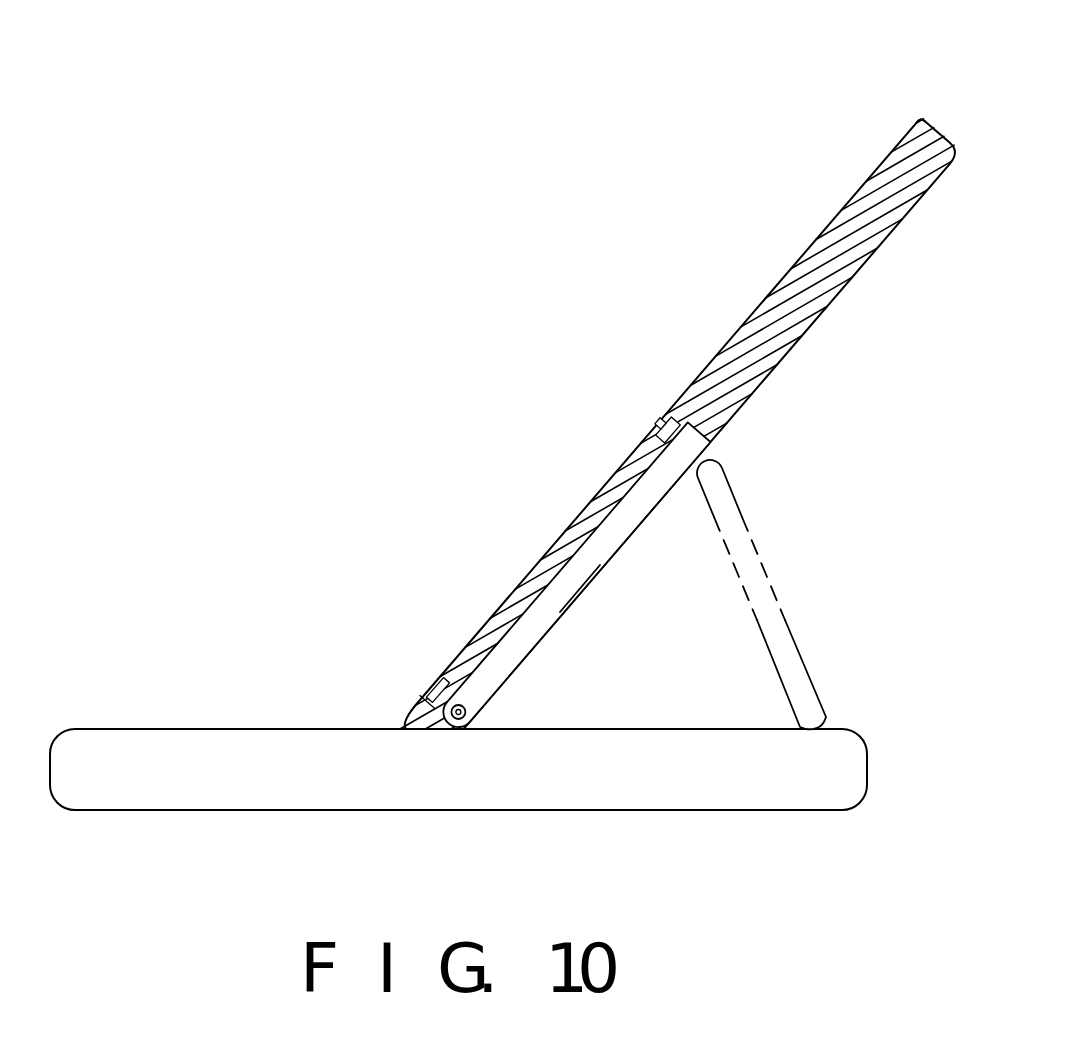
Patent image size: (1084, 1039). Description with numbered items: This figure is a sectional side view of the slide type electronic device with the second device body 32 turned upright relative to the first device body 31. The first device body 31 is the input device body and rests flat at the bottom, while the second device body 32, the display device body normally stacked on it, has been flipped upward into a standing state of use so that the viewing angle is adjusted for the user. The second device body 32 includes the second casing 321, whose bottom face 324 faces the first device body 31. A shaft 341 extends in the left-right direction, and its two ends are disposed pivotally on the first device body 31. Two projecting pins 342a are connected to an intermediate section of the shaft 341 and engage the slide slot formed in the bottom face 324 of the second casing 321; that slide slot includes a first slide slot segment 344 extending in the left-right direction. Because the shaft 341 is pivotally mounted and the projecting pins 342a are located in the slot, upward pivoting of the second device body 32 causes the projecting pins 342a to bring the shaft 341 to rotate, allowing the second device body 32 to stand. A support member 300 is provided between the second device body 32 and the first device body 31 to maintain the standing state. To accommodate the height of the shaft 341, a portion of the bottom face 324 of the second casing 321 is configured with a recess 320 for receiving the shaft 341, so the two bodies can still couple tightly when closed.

The first device body 31 is at (202, 770).
The second device body 32 is at (745, 282).
The second casing 321 is at (918, 115).
The support member 300 is at (781, 642).
The recess 320 is at (540, 622).
The bottom face 324 is at (597, 577).
The first slide slot segment 344 is at (680, 413).
The projecting pins 342a is at (443, 682).
The shaft 341 is at (470, 711).